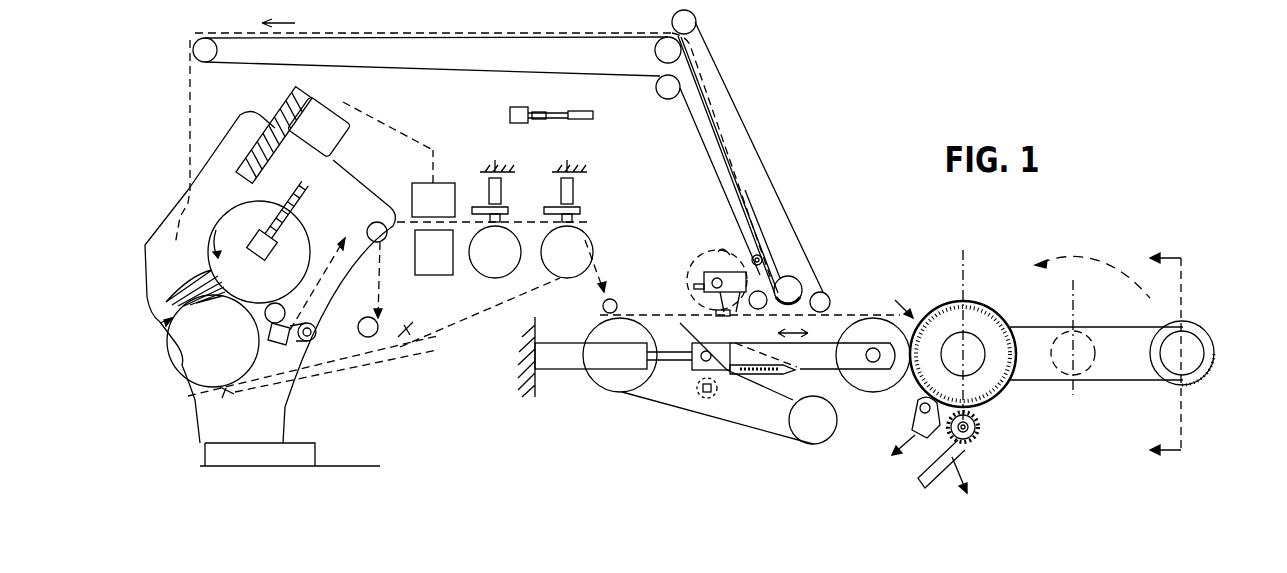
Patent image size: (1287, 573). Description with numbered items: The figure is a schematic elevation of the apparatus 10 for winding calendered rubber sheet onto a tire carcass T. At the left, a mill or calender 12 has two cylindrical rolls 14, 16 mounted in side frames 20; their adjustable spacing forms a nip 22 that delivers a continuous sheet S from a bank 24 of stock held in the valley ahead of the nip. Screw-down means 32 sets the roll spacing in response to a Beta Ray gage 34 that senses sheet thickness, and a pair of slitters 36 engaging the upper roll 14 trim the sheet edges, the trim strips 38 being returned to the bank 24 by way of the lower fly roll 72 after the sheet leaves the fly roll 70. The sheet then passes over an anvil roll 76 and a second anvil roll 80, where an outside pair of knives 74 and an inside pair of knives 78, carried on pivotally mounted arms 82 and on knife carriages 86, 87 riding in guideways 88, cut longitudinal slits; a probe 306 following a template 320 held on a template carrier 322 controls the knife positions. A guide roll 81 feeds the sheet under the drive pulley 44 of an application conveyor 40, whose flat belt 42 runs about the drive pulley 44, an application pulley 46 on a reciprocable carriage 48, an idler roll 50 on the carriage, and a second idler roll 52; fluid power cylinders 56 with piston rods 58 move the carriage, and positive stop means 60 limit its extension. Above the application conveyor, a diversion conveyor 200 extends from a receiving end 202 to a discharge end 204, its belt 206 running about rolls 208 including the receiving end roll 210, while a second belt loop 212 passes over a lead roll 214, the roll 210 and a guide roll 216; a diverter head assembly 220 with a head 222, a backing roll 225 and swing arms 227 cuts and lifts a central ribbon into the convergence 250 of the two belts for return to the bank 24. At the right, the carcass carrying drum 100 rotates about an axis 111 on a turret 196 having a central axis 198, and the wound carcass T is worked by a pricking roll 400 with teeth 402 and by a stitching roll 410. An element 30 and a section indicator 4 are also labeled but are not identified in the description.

The apparatus 10 is at (755, 104).
The mill or calender 12 is at (215, 215).
The upper roll 14 is at (300, 230).
The roll 16 is at (228, 396).
The side frames 20 is at (283, 407).
The nip 22 is at (230, 303).
The bank of stock 24 is at (175, 290).
The cutter blade 30 is at (336, 135).
The screw-down means 32 is at (350, 148).
The Beta Ray gage 34 is at (445, 185).
The slitters 36 is at (290, 310).
The trim strips 38 is at (380, 320).
The application conveyor 40 is at (665, 418).
The endless looped flat belt 42 is at (738, 425).
The drive pulley 44 is at (600, 383).
The application pulley 46 is at (862, 390).
The carriage 48 is at (880, 385).
The idler roll 50 is at (700, 340).
The second idler roll 52 is at (815, 444).
The fluid power cylinders 56 is at (558, 350).
The piston rods 58 is at (672, 361).
The adjustable positive stop means 60 is at (762, 376).
The fly roll 70 is at (380, 220).
The lower fly roll 72 is at (404, 337).
The outside pair of knives 74 is at (502, 218).
The anvil roll 76 is at (490, 275).
The inside pair of knives 78 is at (585, 214).
The second anvil roll 80 is at (585, 245).
The guide roll 81 is at (617, 303).
The pivotally mounted arms 82 is at (478, 207).
The knife carriages 86 is at (500, 185).
The knife carriages 87 is at (575, 188).
The guideways 88 is at (533, 152).
The carcass carrying drum 100 is at (985, 340).
The axis 111 is at (963, 266).
The turret 196 is at (1100, 380).
The central axis 198 is at (1073, 302).
The belt conveyor 200 is at (765, 156).
The receiving end 202 is at (810, 268).
The discharge end 204 is at (195, 40).
The endless looped belt 206 is at (478, 70).
The rolls 208 is at (194, 50).
The receiving end roll 210 is at (793, 276).
The second endless belt loop 212 is at (722, 60).
The lead roll 214 is at (757, 309).
The guide roll 216 is at (826, 296).
The diverter head assembly 220 is at (710, 268).
The head 222 is at (742, 262).
The backing roll 225 is at (705, 312).
The swing arms 227 is at (714, 391).
The convergence 250 is at (782, 276).
The probe 306 is at (508, 116).
The template 320 is at (558, 112).
The template carrier 322 is at (595, 117).
The pricking roll 400 is at (980, 428).
The teeth 402 is at (972, 447).
The stitching roll 410 is at (912, 425).
The section line 4 is at (1108, 354).
The sheet S is at (325, 262).
The tire carcass T is at (948, 300).